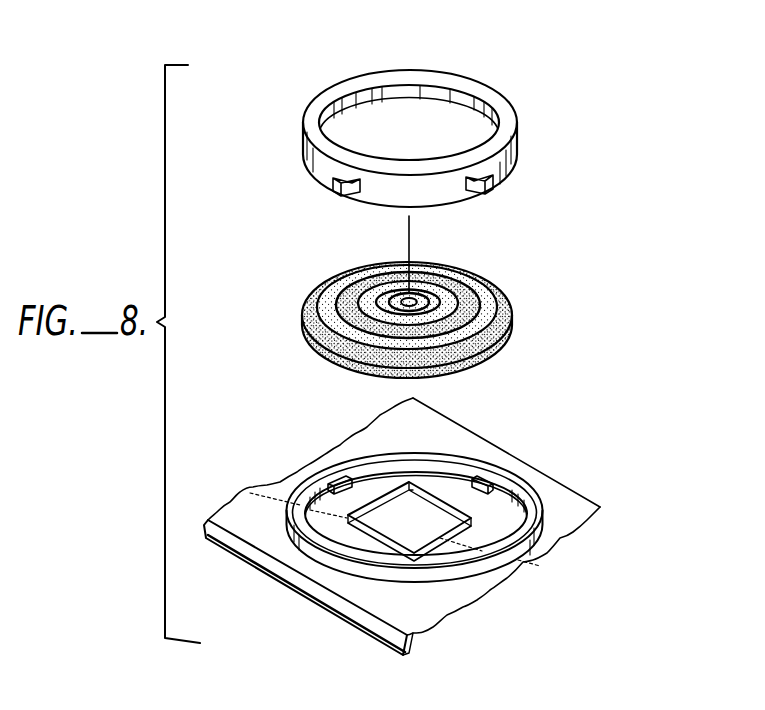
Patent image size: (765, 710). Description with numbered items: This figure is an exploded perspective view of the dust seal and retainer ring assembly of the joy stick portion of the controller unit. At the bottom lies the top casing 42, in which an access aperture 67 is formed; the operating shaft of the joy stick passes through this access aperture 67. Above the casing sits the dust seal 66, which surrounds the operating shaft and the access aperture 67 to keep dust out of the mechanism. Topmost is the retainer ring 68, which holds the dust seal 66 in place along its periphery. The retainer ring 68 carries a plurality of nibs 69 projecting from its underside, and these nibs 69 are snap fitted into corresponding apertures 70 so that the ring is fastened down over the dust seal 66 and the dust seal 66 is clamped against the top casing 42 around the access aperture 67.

The top casing 42 is at (456, 421).
The dust seal 66 is at (489, 293).
The access aperture 67 is at (440, 500).
The retainer ring 68 is at (493, 82).
The nibs 69 is at (339, 194).
The apertures 70 is at (336, 477).